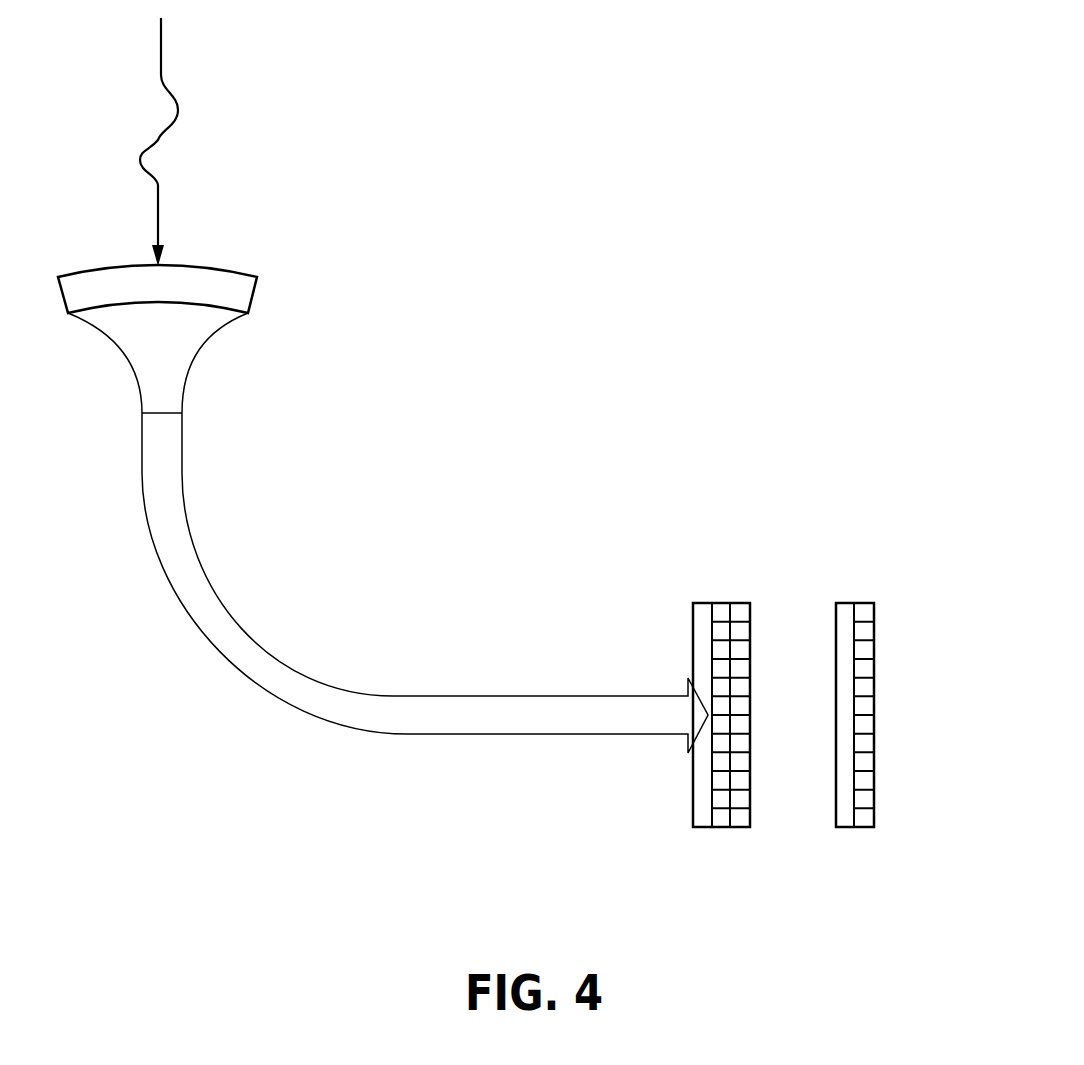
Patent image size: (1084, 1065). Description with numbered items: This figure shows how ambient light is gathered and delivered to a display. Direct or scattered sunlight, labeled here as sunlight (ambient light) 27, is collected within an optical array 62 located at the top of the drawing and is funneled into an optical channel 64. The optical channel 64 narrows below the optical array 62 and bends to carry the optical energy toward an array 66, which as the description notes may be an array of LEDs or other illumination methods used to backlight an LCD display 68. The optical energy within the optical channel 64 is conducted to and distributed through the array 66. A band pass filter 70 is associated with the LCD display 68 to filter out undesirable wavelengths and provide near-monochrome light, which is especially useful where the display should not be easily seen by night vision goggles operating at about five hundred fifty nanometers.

The sunlight (ambient light) 27 is at (345, 142).
The optical array 62 is at (223, 272).
The optical channel 64 is at (388, 533).
The array 66 is at (670, 700).
The LCD display 68 is at (880, 700).
The band pass filter 70 is at (847, 834).